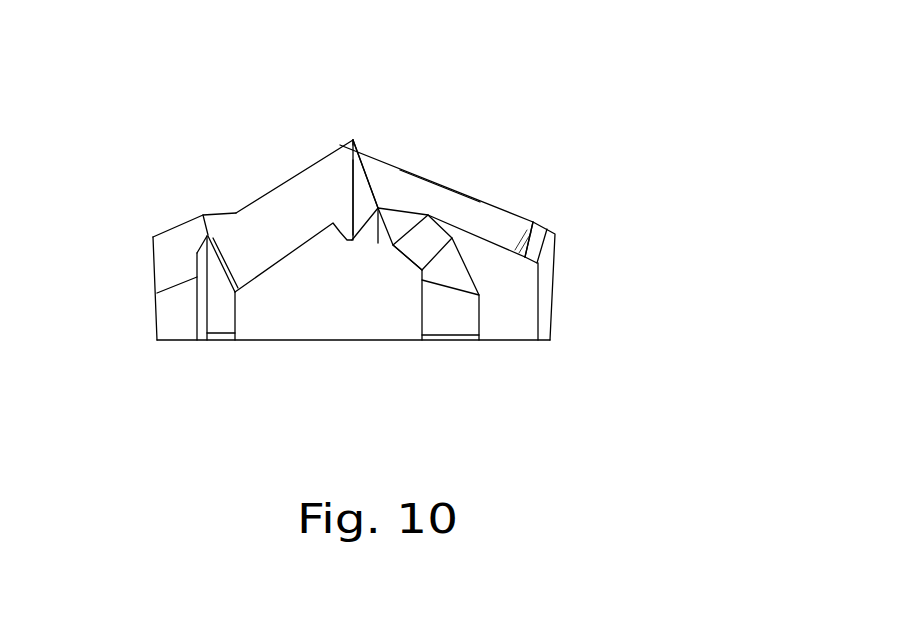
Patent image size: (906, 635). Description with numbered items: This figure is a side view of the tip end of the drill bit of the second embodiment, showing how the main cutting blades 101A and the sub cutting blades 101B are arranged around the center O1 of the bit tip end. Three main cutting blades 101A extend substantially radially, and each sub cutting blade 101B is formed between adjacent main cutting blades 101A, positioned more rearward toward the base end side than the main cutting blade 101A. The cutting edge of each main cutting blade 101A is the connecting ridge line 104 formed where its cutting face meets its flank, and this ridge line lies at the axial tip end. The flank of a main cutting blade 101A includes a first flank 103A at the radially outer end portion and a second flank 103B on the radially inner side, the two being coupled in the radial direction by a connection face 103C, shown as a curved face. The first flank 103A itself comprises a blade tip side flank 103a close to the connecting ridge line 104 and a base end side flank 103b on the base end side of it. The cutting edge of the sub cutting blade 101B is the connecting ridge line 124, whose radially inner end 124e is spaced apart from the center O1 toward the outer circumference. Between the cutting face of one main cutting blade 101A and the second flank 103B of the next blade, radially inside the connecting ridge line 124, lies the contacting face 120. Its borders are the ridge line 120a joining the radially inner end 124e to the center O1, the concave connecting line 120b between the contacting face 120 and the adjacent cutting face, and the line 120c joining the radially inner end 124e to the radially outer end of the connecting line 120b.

The center of the bit tip end O1 is at (360, 187).
The main cutting blade 101A is at (225, 315).
The sub cutting blade 101B is at (167, 267).
The first flank 103A is at (690, 227).
The blade tip side flank 103a is at (555, 235).
The base end side flank 103b is at (535, 248).
The second flank 103B is at (422, 193).
The connection face 103C is at (533, 221).
The connecting ridge line 104 is at (258, 197).
The contacting face 120 is at (340, 145).
The ridge line 120a is at (378, 208).
The connecting line 120b is at (353, 200).
The line 120c is at (378, 243).
The connecting ridge line 124 is at (398, 208).
The radially inner end 124e is at (381, 245).